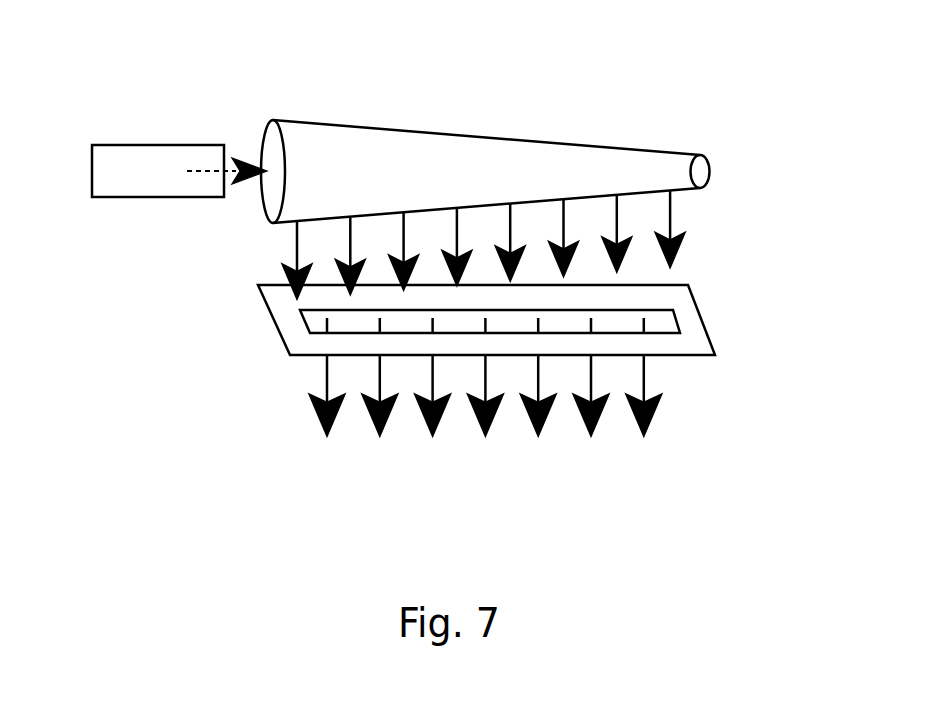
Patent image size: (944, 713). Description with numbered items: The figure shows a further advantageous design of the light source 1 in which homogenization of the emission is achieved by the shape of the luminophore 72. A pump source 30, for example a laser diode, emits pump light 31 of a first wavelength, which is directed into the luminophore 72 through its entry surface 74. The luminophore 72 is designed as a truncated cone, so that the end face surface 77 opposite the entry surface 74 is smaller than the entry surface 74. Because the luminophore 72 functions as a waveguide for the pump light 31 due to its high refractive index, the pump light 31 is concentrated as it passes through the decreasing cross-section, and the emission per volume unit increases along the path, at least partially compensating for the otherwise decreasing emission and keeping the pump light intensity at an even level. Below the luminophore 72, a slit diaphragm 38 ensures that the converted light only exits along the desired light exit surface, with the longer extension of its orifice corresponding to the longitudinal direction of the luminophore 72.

The light source 1 is at (218, 384).
The pump source 30 is at (129, 148).
The pump light 31 is at (217, 172).
The luminophore 72 is at (520, 158).
The entry surface 74 is at (273, 148).
The end face surface 77 is at (697, 170).
The slit diaphragm 38 is at (693, 357).